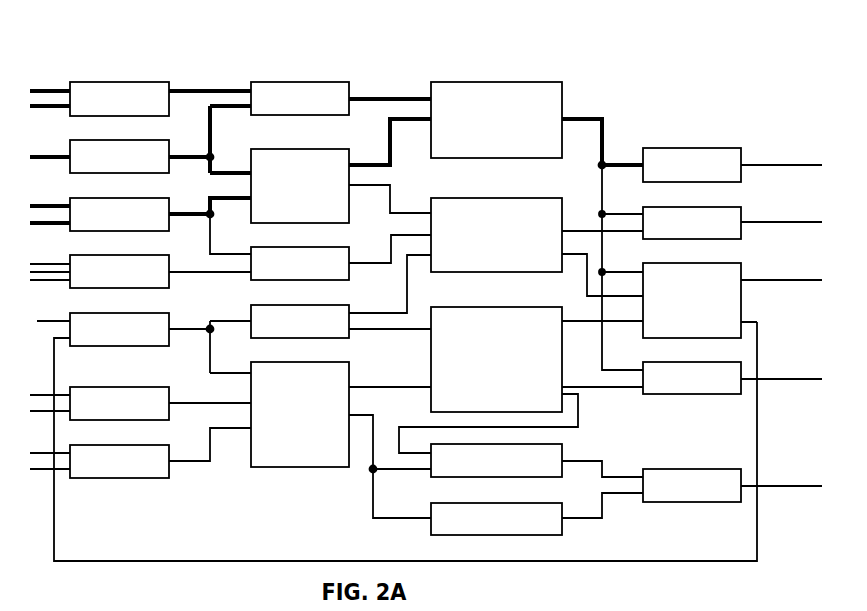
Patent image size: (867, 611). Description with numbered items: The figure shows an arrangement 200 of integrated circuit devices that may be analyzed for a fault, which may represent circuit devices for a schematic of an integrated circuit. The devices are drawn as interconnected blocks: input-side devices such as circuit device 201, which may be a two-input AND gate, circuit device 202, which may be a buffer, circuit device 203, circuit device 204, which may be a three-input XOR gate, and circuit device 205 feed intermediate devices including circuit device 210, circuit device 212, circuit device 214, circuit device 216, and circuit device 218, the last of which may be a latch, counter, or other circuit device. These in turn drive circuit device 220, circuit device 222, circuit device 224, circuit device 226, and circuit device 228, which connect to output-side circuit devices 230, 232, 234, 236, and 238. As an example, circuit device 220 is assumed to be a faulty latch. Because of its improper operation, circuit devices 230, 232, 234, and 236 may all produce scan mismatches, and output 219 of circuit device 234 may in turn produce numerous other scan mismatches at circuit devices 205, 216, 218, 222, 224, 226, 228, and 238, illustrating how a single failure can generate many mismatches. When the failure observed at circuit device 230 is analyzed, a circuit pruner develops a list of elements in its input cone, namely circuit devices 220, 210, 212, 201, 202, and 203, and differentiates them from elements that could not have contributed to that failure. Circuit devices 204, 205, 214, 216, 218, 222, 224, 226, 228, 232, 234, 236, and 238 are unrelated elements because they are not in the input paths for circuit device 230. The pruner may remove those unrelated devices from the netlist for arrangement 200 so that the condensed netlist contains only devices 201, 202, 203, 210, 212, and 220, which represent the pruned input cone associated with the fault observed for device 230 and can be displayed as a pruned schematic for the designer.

The arrangement 200 is at (725, 82).
The circuit device 201 is at (140, 99).
The circuit device 202 is at (140, 139).
The circuit device 203 is at (140, 226).
The circuit device 204 is at (140, 271).
The circuit device 205 is at (144, 343).
The circuit device 210 is at (341, 98).
The circuit device 212 is at (341, 171).
The circuit device 214 is at (341, 257).
The circuit device 216 is at (341, 296).
The circuit device 218 is at (341, 440).
The output 219 is at (348, 560).
The circuit device 220 is at (537, 226).
The circuit device 222 is at (537, 247).
The circuit device 224 is at (521, 380).
The circuit device 226 is at (537, 460).
The circuit device 228 is at (537, 514).
The circuit device 230 is at (732, 165).
The circuit device 232 is at (732, 223).
The circuit device 234 is at (732, 300).
The circuit device 236 is at (732, 378).
The circuit device 238 is at (732, 485).